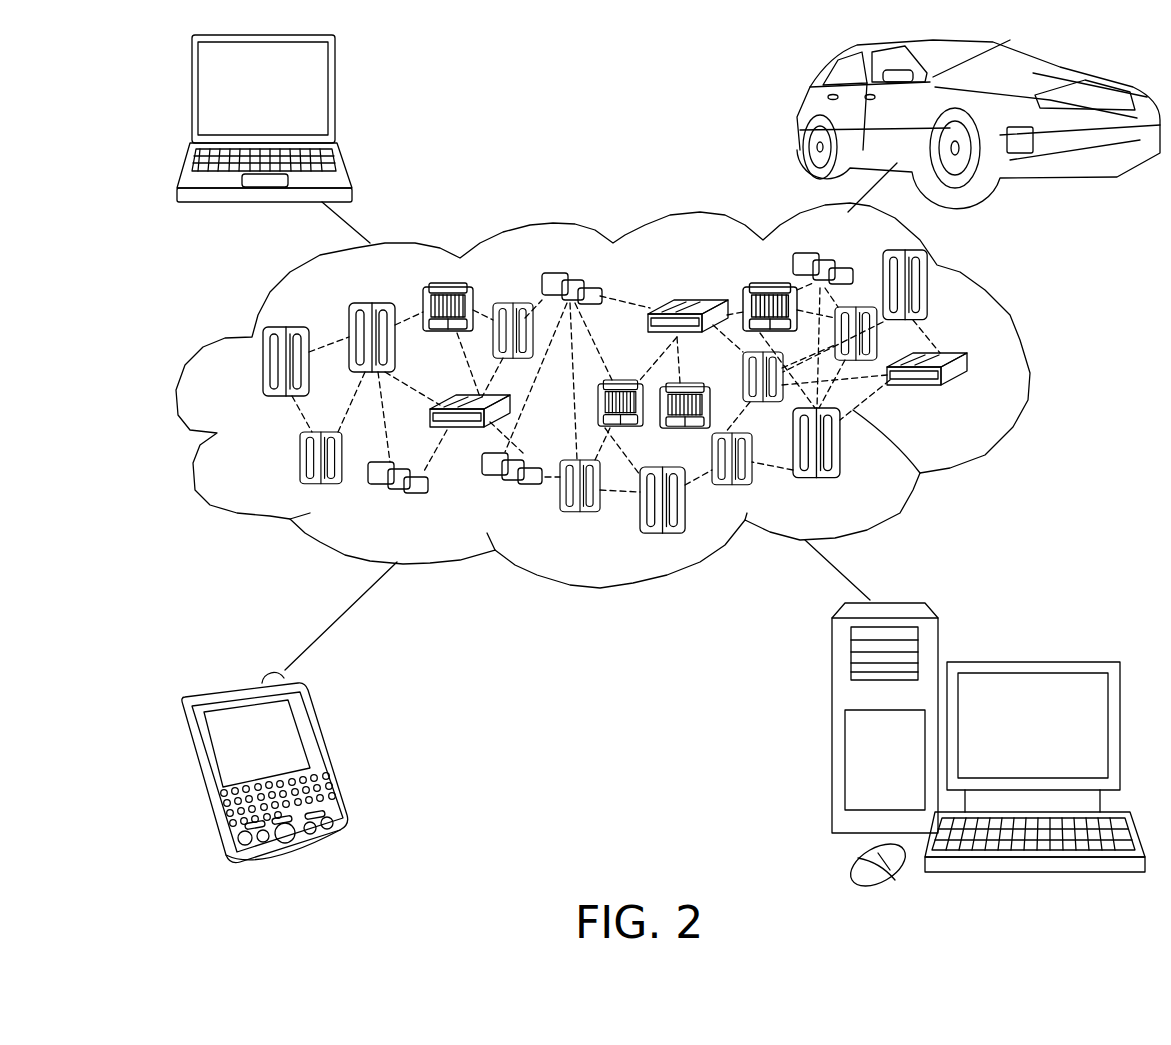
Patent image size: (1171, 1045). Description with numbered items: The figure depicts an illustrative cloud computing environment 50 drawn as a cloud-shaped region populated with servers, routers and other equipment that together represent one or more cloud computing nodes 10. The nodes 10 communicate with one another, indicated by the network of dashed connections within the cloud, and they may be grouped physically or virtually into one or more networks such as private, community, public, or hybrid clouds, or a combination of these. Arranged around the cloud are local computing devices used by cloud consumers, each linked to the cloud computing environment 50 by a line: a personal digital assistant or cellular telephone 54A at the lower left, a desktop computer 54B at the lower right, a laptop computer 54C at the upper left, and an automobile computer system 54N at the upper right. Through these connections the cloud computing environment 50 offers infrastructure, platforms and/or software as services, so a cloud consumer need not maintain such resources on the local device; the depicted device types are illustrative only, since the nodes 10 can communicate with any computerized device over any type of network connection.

The cloud computing node 10 is at (970, 400).
The cloud computing environment 50 is at (1030, 370).
The personal digital assistant or cellular telephone 54A is at (323, 757).
The desktop computer 54B is at (1030, 662).
The laptop computer 54C is at (335, 97).
The automobile computer system 54N is at (798, 115).